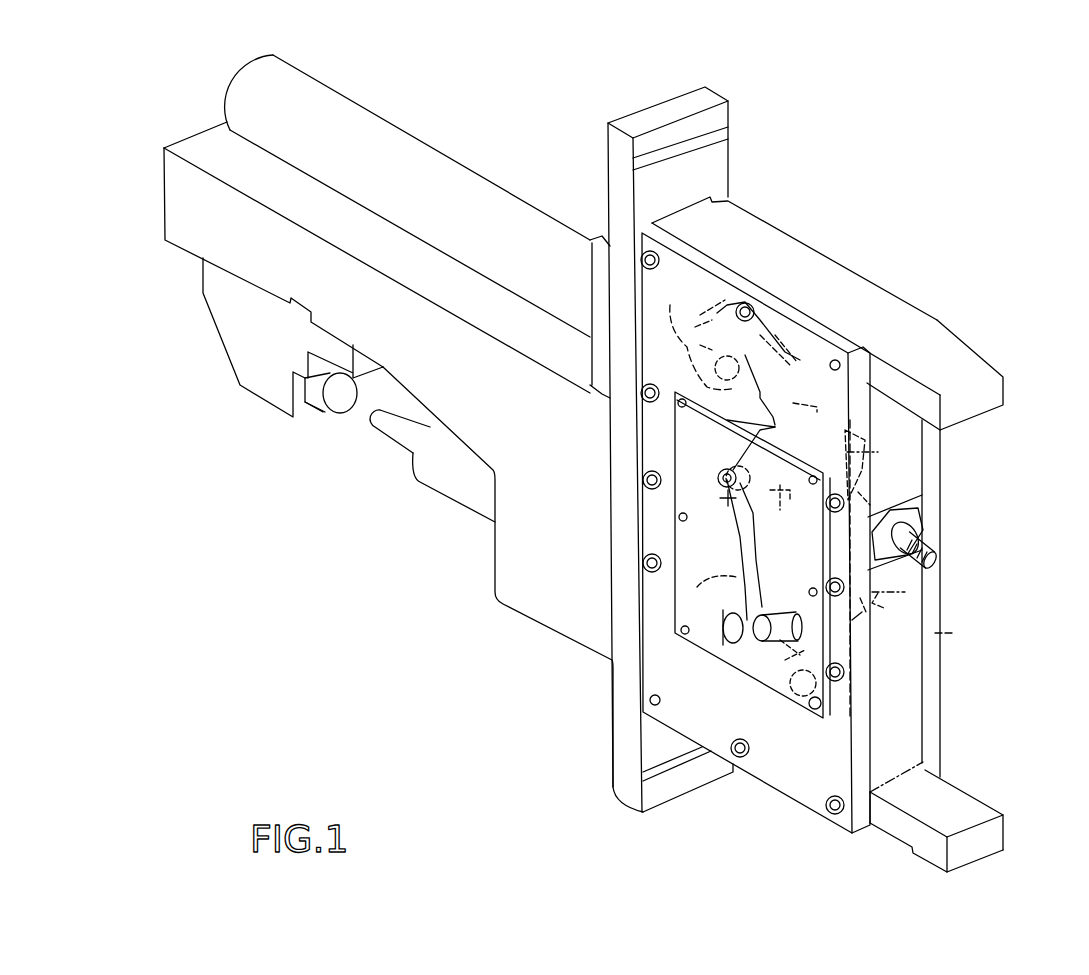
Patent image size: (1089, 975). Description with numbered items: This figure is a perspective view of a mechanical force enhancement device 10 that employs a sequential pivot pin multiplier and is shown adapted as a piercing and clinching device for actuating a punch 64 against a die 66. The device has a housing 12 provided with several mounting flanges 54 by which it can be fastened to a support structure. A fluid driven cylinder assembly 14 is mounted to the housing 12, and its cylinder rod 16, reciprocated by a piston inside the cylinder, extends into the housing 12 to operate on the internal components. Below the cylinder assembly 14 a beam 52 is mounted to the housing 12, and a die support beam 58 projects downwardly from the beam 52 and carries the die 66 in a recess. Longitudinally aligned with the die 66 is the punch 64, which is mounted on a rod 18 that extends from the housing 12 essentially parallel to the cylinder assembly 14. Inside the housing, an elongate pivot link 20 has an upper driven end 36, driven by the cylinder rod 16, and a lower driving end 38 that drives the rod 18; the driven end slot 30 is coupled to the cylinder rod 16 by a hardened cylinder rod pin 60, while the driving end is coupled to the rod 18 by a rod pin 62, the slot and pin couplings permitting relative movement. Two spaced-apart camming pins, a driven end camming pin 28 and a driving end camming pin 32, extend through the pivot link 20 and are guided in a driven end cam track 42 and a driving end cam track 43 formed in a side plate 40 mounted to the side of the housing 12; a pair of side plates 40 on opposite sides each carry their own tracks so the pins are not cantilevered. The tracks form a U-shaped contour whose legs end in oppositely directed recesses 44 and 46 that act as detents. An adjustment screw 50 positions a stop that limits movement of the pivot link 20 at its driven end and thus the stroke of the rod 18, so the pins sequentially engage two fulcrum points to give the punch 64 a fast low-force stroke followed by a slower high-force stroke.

The mechanical force enhancement device 10 is at (539, 165).
The housing 12 is at (885, 656).
The fluid driven cylinder assembly 14 is at (372, 137).
The cylinder rod 16 is at (728, 462).
The rod 18 is at (690, 648).
The pivot link 20 is at (803, 596).
The driven end camming pin 28 is at (730, 500).
The driven end slot 30 is at (720, 292).
The driving end camming pin 32 is at (752, 645).
The driven end 36 is at (737, 237).
The driving end 38 is at (865, 722).
The side plate 40 is at (658, 602).
The driven end cam track 42 is at (797, 537).
The driving end cam track 43 is at (790, 650).
The recess 44 is at (722, 483).
The recess 46 is at (720, 645).
The adjustment screw 50 is at (930, 567).
The beam 52 is at (212, 155).
The mounting flanges 54 is at (705, 167).
The die support beam 58 is at (228, 342).
The cylinder rod pin 60 is at (675, 315).
The rod pin 62 is at (800, 717).
The punch 64 is at (453, 477).
The die 66 is at (327, 403).